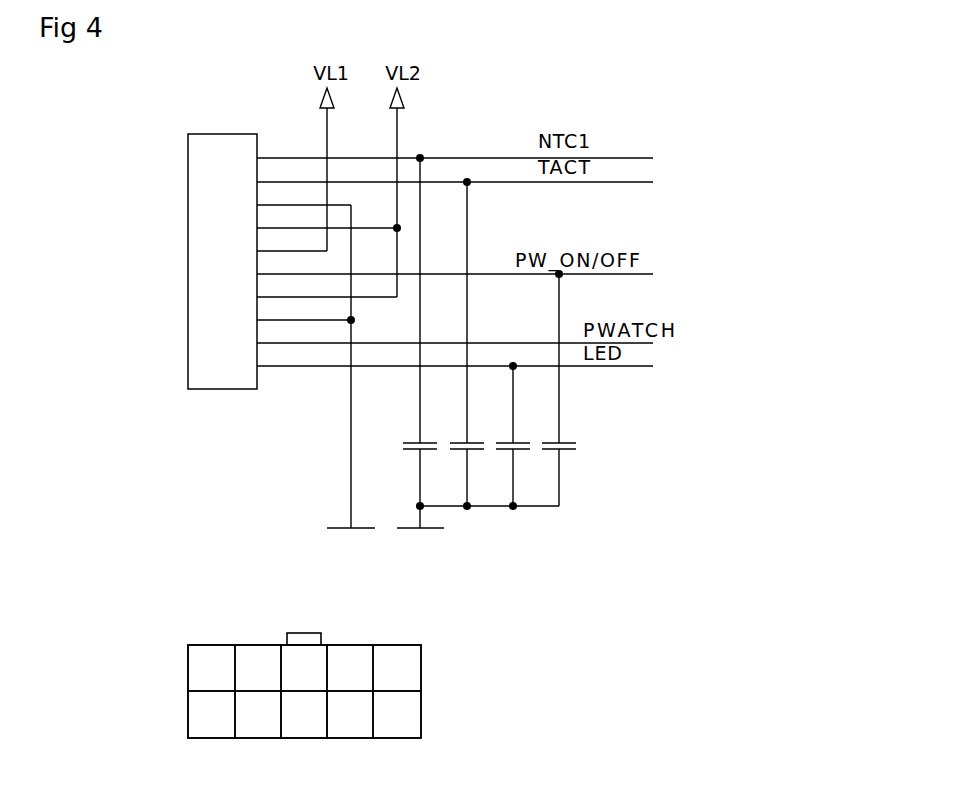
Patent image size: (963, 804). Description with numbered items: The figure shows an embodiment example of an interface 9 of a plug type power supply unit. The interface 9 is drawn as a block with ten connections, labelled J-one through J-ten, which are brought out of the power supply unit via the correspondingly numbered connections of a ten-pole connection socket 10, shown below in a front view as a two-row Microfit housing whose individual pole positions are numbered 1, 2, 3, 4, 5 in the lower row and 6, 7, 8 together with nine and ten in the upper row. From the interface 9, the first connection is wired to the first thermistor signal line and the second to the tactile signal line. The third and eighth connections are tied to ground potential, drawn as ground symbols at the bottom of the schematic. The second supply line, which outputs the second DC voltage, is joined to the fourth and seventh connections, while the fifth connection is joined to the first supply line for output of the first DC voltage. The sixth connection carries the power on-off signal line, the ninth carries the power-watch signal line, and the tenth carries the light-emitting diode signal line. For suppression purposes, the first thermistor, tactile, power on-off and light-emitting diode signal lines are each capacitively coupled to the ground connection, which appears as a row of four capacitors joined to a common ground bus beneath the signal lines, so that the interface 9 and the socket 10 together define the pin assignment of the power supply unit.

The interface 9 is at (188, 234).
The ten-pole connection socket 10 is at (335, 687).
The connector pin 1 is at (211, 714).
The connector pin 2 is at (258, 714).
The connector pin 3 is at (304, 714).
The connector pin 4 is at (350, 714).
The connector pin 5 is at (397, 714).
The connector pin 6 is at (397, 668).
The connector pin 7 is at (350, 668).
The connector pin 8 is at (304, 668).